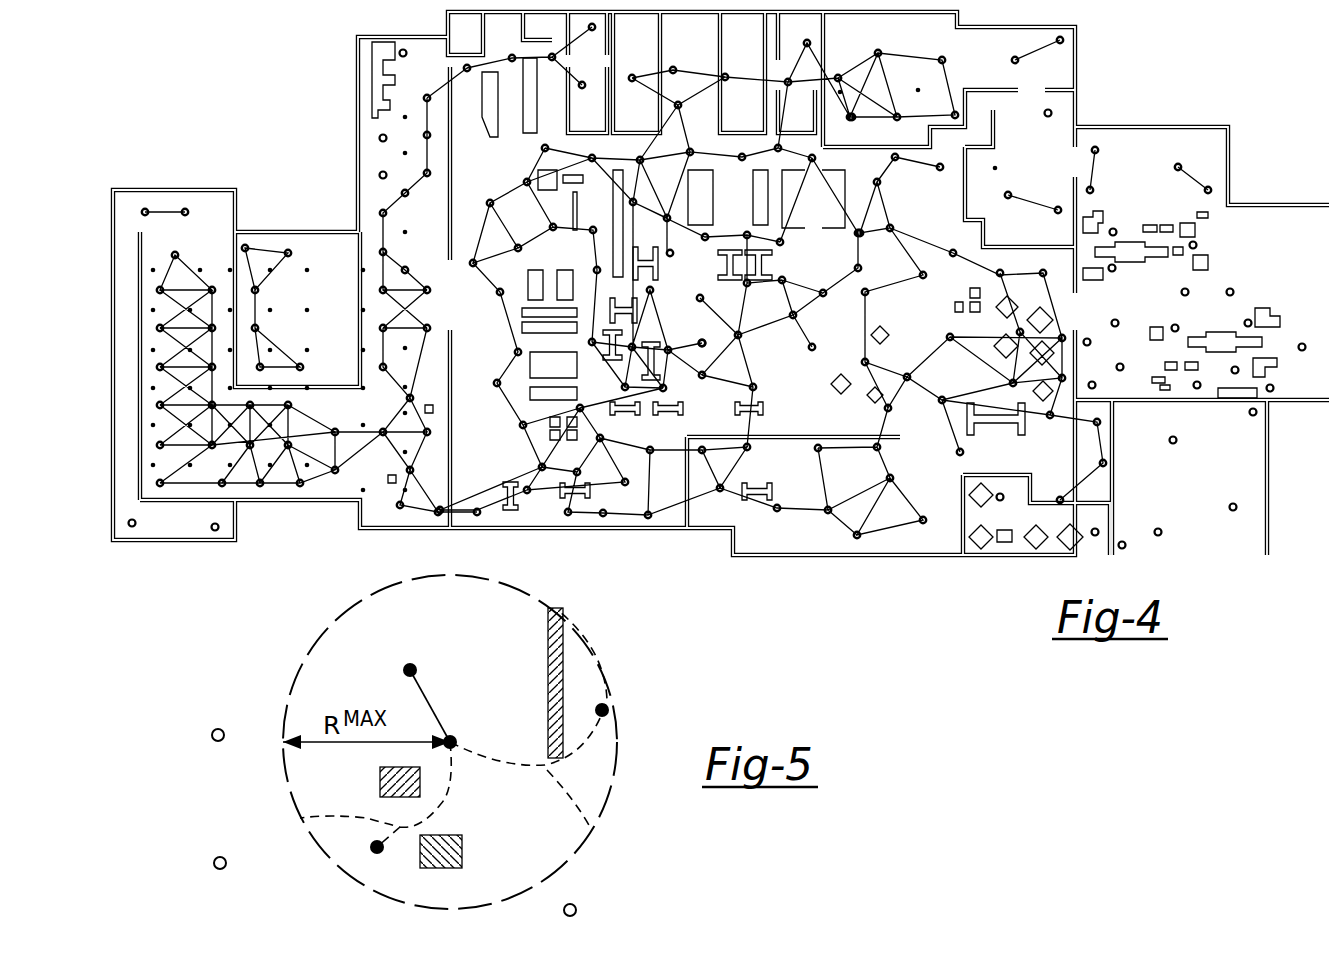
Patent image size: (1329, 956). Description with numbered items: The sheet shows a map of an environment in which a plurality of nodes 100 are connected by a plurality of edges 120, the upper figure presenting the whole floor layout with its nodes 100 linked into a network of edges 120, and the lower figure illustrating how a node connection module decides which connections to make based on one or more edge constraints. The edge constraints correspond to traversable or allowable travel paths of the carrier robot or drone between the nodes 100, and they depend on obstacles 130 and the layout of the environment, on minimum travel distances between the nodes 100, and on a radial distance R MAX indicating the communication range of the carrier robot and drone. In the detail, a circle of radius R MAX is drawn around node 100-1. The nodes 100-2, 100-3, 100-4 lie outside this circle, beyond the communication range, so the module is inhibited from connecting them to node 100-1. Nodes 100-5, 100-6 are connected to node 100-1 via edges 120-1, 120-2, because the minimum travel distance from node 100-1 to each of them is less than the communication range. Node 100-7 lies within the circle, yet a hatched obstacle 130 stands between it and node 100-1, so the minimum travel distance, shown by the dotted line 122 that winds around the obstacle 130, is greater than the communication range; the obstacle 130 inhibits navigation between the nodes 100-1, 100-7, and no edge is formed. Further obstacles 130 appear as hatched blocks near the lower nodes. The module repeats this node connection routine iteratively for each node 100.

In FIG. 4, the node 100 is at (245, 244).
In FIG. 4, the edge 120 is at (268, 247).
In FIG. 5, the node 100-1 is at (455, 737).
In FIG. 5, the node 100-2 is at (214, 730).
In FIG. 5, the node 100-3 is at (215, 859).
In FIG. 5, the node 100-4 is at (577, 910).
In FIG. 5, the node 100-5 is at (410, 663).
In FIG. 5, the node 100-6 is at (377, 853).
In FIG. 5, the node 100-7 is at (608, 708).
In FIG. 5, the edge 120-1 is at (424, 697).
In FIG. 5, the edge 120-2 is at (300, 818).
In FIG. 5, the dotted line 122 is at (590, 827).
In FIG. 5, the obstacle 130 is at (452, 833).